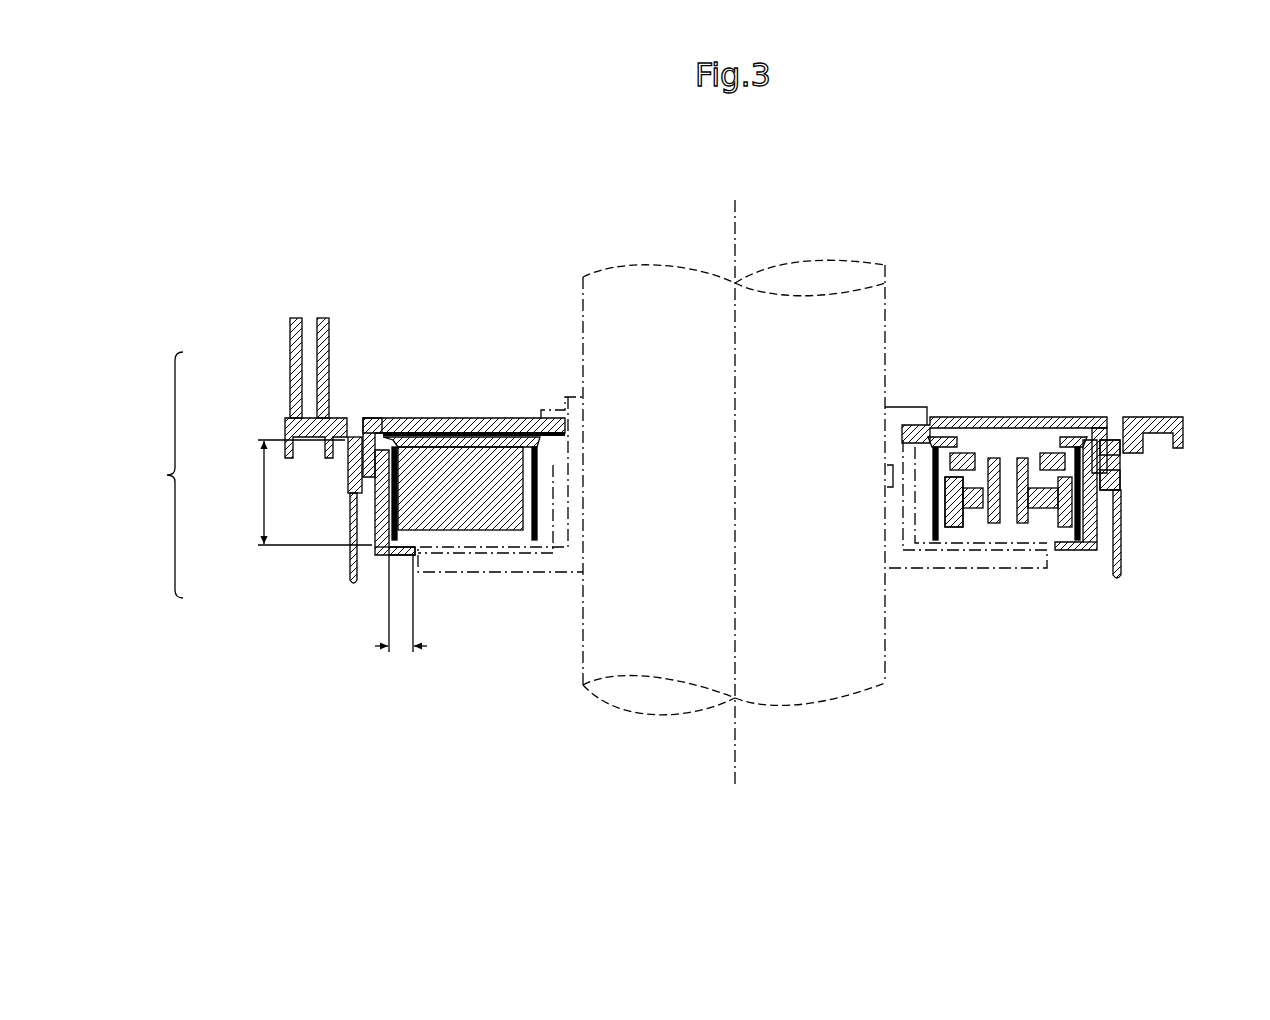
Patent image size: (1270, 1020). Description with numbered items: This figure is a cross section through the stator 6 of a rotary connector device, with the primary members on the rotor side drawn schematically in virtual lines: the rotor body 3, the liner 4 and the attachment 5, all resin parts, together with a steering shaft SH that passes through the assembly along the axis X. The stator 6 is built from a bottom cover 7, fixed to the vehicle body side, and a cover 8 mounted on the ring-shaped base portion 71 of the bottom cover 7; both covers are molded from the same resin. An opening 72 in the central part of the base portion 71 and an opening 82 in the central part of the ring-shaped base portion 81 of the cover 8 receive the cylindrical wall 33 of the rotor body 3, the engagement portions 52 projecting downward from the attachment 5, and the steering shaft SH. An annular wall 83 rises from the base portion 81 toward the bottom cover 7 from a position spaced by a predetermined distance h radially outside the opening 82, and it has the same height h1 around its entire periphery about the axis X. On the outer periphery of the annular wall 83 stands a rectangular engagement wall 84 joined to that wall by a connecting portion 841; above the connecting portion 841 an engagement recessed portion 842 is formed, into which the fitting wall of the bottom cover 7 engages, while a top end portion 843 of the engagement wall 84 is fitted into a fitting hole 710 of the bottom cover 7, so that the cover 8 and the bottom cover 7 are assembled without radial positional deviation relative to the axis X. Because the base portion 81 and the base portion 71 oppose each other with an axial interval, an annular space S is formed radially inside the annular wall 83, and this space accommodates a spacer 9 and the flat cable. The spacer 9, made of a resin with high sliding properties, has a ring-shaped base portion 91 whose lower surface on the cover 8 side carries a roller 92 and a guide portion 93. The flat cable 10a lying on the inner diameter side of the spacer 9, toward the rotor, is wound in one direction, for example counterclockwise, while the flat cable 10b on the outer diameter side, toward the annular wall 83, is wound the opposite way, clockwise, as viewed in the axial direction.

The rotor body 3 is at (883, 558).
The liner 4 is at (570, 505).
The attachment 5 is at (883, 438).
The stator 6 is at (163, 475).
The bottom cover 7 is at (277, 425).
The cover 8 is at (337, 573).
The spacer 9 is at (473, 532).
The flat cable 10a is at (538, 460).
The flat cable 10b is at (390, 483).
The cylindrical wall 33 is at (893, 527).
The engagement portions 52 is at (887, 465).
The base portion 71 is at (412, 421).
The opening 72 is at (903, 427).
The base portion 81 is at (403, 550).
The opening 82 is at (418, 551).
The annular wall 83 is at (380, 507).
The engagement wall 84 is at (1107, 485).
The base portion 91 is at (462, 436).
The roller 92 is at (960, 526).
The guide portion 93 is at (493, 462).
The fitting hole 710 is at (362, 440).
The connecting portion 841 is at (1118, 480).
The engagement recessed portion 842 is at (1112, 463).
The top end portion 843 is at (347, 437).
The annular space S is at (542, 534).
The steering shaft SH is at (885, 660).
The axis X is at (735, 478).
The predetermined distance h is at (401, 616).
The height h1 is at (300, 492).